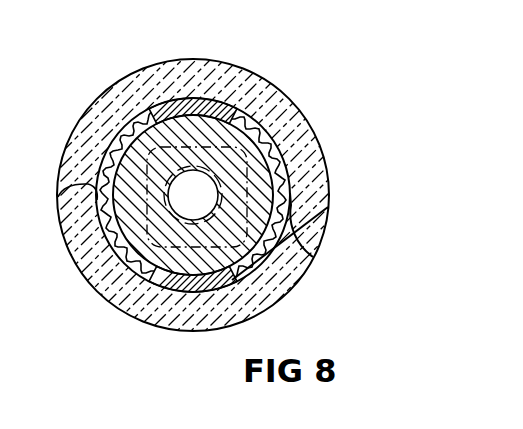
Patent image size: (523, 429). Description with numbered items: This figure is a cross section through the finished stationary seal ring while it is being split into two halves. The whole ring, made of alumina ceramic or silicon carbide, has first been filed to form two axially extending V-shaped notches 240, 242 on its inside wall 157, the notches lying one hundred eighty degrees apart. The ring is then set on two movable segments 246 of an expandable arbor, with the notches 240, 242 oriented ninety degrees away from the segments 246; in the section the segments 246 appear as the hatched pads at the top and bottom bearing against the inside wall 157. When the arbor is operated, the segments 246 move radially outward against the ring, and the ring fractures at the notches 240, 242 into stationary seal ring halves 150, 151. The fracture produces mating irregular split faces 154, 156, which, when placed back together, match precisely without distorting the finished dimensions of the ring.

The stationary seal ring half 150 is at (98, 285).
The stationary seal ring half 151 is at (118, 82).
The irregular split face 154 is at (62, 202).
The irregular split face 156 is at (300, 195).
The inside wall 157 is at (107, 147).
The V-shaped notch 240 is at (104, 184).
The V-shaped notch 242 is at (313, 257).
The movable segments 246 is at (190, 100).